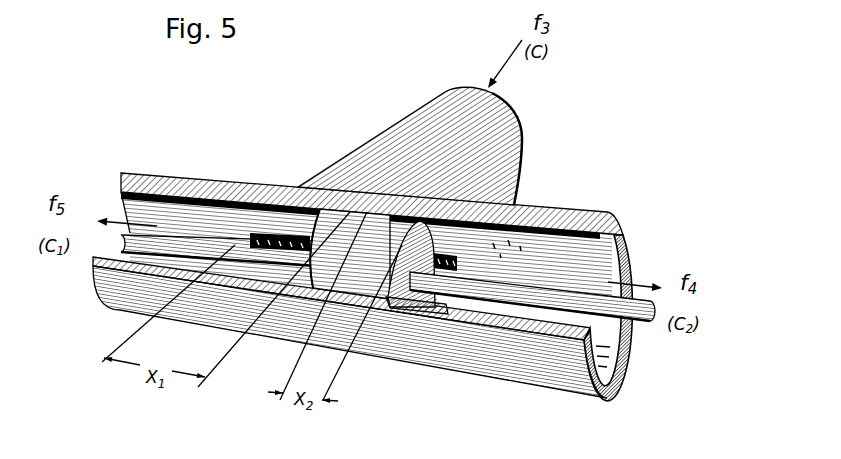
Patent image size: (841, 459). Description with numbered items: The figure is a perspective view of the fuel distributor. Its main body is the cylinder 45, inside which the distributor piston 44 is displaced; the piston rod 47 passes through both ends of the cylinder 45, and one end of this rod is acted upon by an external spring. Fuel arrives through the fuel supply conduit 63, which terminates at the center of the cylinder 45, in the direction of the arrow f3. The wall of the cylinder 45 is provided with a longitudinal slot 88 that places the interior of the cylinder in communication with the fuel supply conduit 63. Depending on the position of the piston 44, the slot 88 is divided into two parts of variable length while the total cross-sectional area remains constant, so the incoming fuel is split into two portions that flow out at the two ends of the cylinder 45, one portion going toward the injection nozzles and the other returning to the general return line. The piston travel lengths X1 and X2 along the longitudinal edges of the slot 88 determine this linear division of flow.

The distributor piston 44 is at (362, 232).
The cylinder 45 is at (543, 208).
The piston rod 47 is at (553, 293).
The fuel supply conduit 63 is at (413, 147).
The longitudinal slot 88 is at (297, 237).